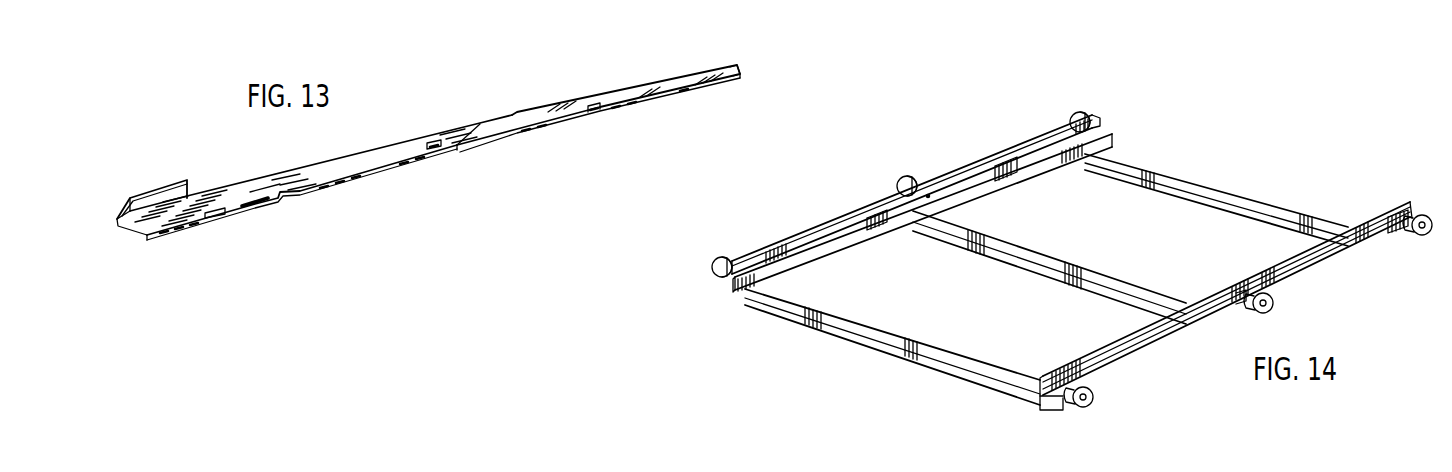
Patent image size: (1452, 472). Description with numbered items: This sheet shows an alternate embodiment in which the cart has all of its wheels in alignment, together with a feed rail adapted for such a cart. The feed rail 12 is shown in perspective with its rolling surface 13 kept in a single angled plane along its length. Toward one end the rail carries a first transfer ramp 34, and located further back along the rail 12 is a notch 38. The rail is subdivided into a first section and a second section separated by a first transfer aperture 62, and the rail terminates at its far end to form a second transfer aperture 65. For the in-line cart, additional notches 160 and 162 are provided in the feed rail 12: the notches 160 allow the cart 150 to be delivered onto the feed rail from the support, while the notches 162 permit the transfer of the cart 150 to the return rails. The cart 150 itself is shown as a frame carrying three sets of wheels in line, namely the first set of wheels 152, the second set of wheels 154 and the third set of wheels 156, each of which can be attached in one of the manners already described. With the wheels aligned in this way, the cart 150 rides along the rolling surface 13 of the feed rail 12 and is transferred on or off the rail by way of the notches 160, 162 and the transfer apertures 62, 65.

In FIG. 13, the feed rails 12 is at (330, 160).
In FIG. 13, the rolling surfaces 13 is at (385, 156).
In FIG. 13, the first transfer ramps 34 is at (156, 193).
In FIG. 13, the notches 38 is at (445, 152).
In FIG. 13, the first transfer apertures 62 is at (491, 118).
In FIG. 13, the second transfer apertures 65 is at (718, 58).
In FIG. 13, the notches 160 is at (280, 197).
In FIG. 13, the notches 162 is at (598, 111).
In FIG. 14, the cart 150 is at (1197, 318).
In FIG. 14, the first set wheels 152 is at (712, 262).
In FIG. 14, the second set of wheels 154 is at (902, 182).
In FIG. 14, the third set of wheel 156 is at (1068, 118).